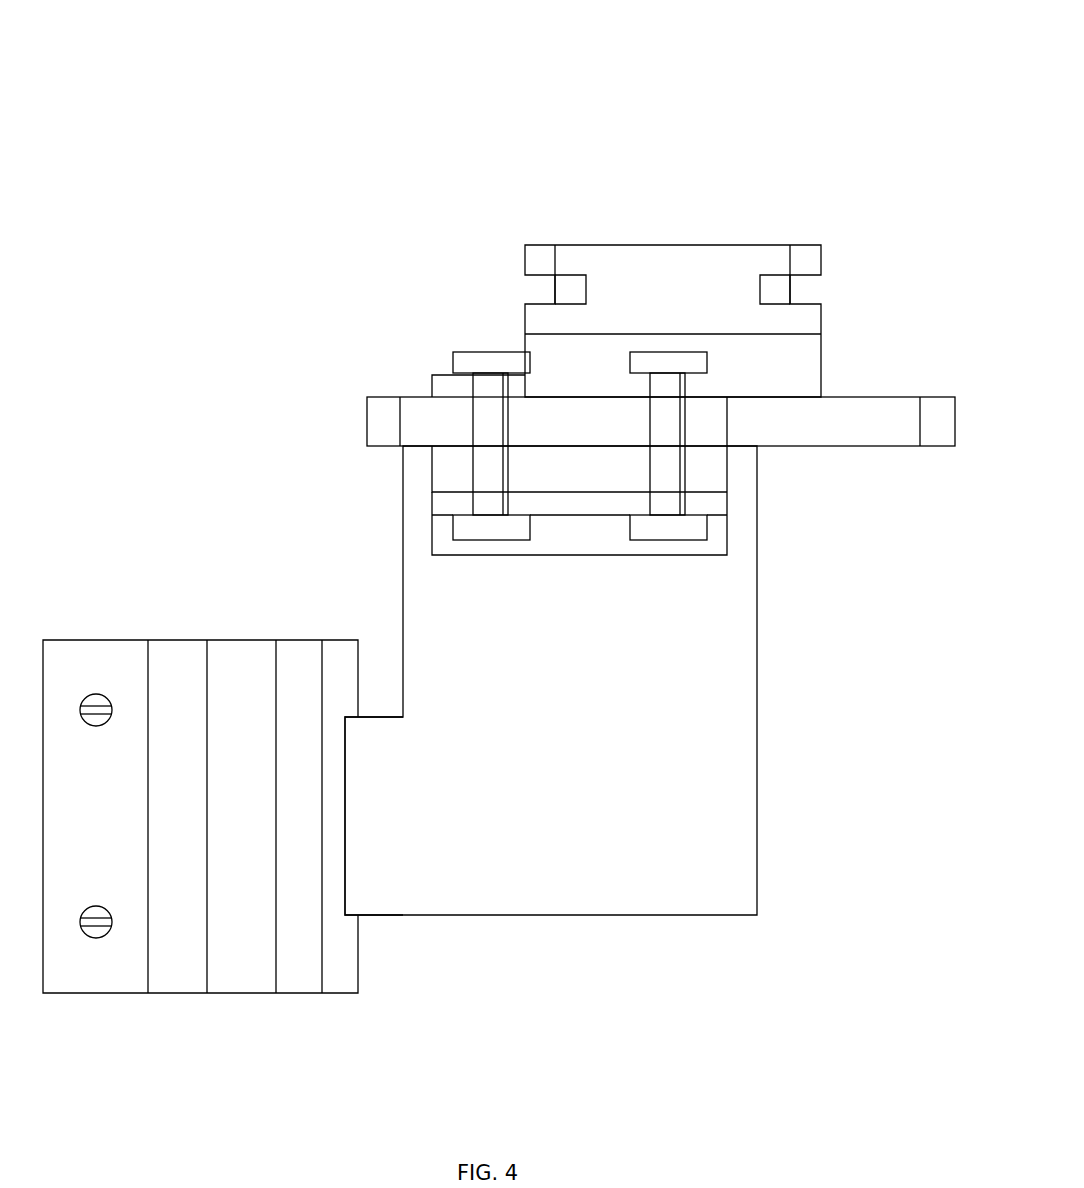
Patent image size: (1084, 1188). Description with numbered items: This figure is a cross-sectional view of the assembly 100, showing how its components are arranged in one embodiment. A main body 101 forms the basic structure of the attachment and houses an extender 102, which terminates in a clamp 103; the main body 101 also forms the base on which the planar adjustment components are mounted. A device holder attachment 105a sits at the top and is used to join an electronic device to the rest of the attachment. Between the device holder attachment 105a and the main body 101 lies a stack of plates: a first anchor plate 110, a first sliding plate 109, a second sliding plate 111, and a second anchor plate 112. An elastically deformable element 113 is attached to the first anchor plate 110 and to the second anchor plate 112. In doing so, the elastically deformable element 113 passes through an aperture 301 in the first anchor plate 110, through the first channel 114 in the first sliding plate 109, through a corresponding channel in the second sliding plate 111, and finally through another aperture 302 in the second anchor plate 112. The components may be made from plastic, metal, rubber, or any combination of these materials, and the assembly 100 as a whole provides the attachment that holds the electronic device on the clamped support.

The assembly 100 is at (223, 103).
The main body 101 is at (760, 708).
The extender 102 is at (387, 917).
The clamp 103 is at (200, 996).
The device holder attachment 105a is at (678, 243).
The first sliding plate 109 is at (367, 412).
The first anchor plate 110 is at (430, 380).
The second sliding plate 111 is at (430, 483).
The second anchor plate 112 is at (732, 507).
The elastically deformable element 113 is at (473, 468).
The first channel 114 is at (922, 408).
The aperture 301 is at (468, 387).
The aperture 302 is at (470, 502).